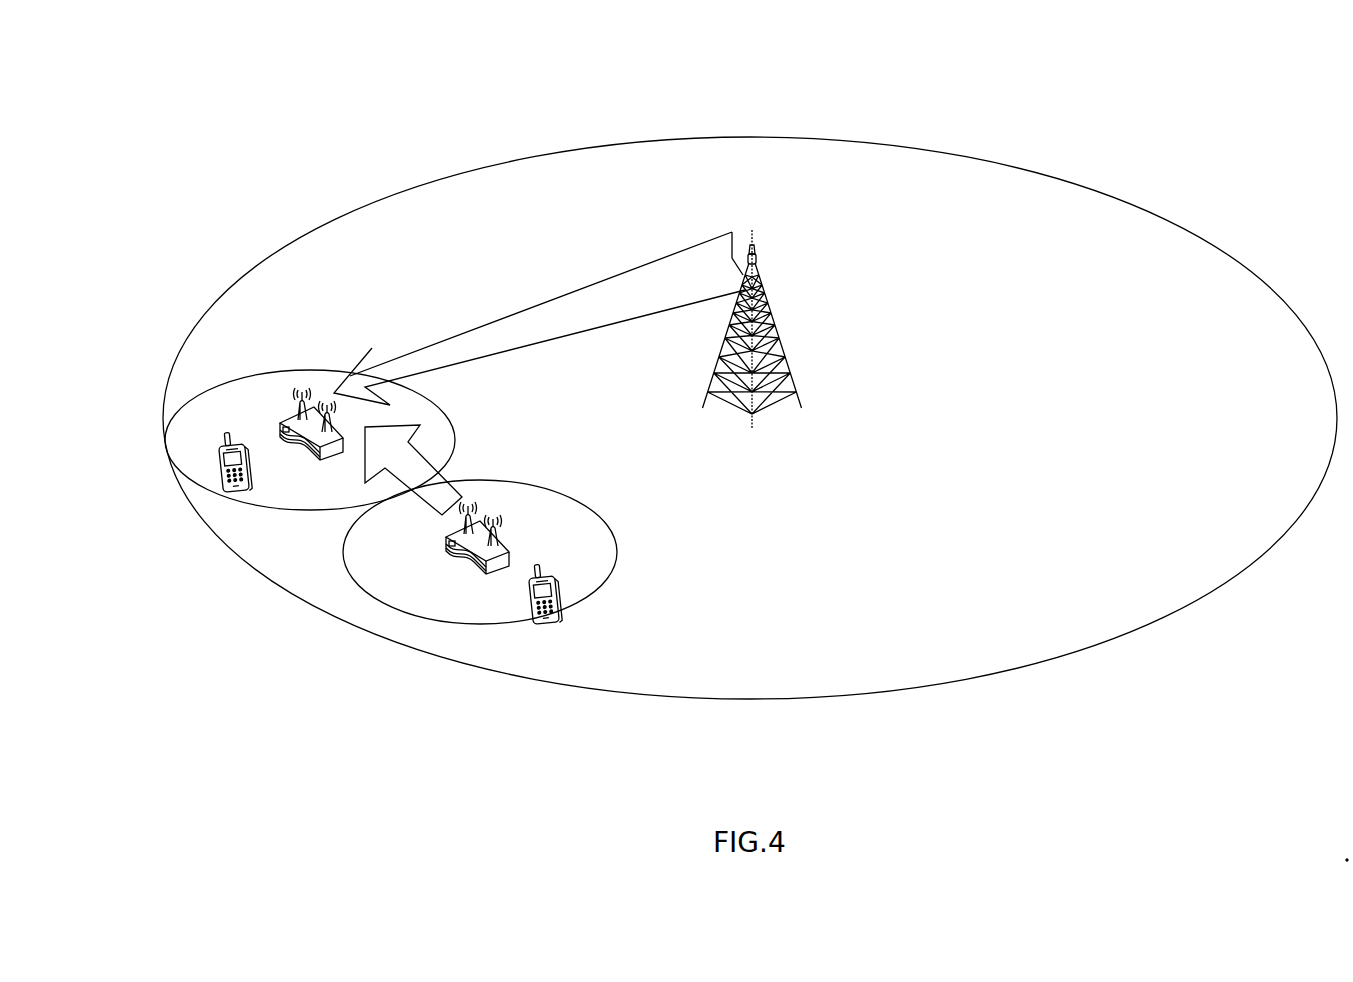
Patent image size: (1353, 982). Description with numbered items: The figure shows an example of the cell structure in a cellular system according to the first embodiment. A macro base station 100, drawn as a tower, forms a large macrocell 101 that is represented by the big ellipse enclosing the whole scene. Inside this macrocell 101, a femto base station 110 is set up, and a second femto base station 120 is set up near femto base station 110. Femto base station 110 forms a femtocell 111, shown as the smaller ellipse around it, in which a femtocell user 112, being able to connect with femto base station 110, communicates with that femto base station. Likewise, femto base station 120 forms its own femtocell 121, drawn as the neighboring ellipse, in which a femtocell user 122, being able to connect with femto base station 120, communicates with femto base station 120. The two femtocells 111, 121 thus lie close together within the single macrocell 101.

The macro base station 100 is at (768, 305).
The macrocell 101 is at (698, 138).
The femto base station 110 is at (213, 398).
The femtocell 111 is at (325, 370).
The femtocell user 112 is at (220, 452).
The femto base station 120 is at (503, 530).
The femtocell 121 is at (482, 482).
The femtocell user 122 is at (565, 608).